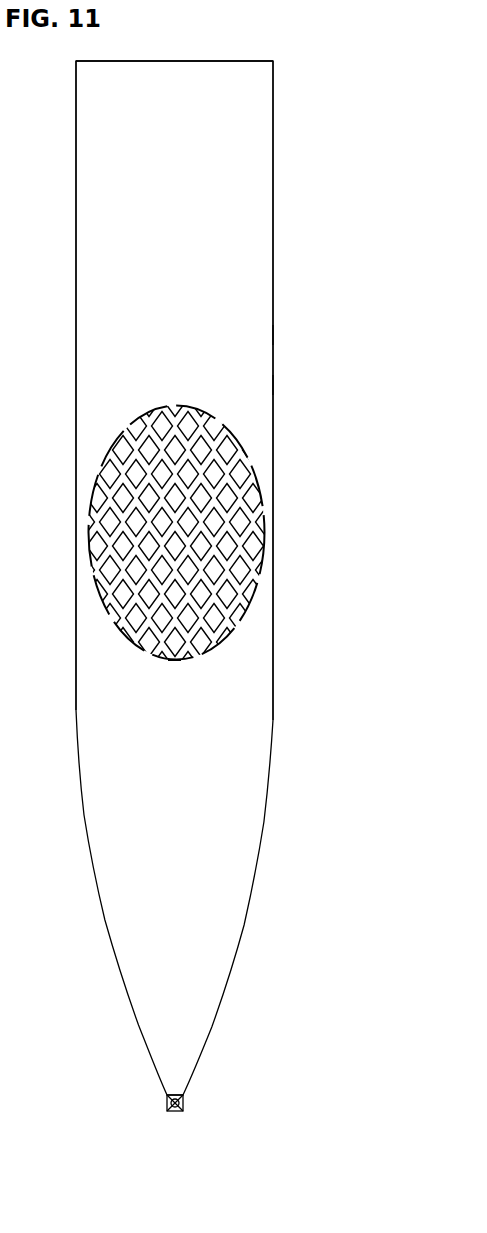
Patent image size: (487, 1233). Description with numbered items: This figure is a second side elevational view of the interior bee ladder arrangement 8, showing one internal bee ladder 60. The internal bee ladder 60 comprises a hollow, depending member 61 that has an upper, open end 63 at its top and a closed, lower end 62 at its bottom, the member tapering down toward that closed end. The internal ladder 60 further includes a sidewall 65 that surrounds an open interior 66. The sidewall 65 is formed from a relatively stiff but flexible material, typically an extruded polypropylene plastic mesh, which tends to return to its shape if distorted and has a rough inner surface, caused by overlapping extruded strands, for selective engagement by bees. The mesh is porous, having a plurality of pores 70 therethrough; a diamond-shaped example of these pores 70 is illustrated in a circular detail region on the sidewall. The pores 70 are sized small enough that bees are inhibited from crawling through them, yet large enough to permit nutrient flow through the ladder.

The interior bee ladder arrangement 8 is at (293, 257).
The internal bee ladder 60 is at (76, 236).
The hollow depending member 61 is at (274, 183).
The closed lower end 62 is at (170, 1110).
The upper open end 63 is at (235, 61).
The sidewall 65 is at (268, 338).
The open interior 66 is at (260, 390).
The pores 70 is at (176, 412).